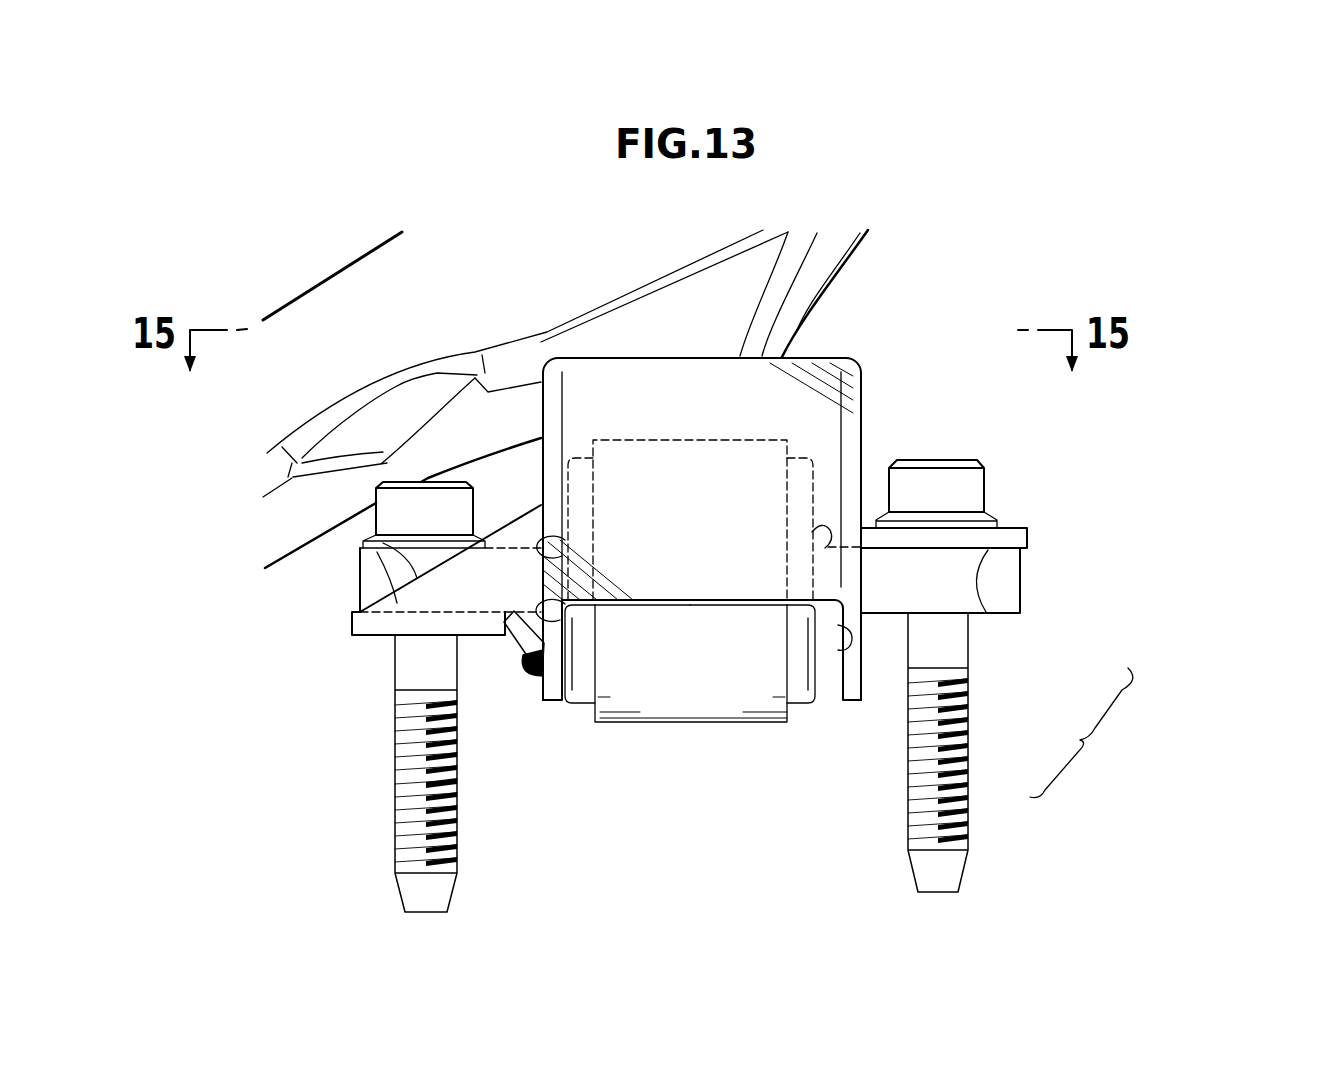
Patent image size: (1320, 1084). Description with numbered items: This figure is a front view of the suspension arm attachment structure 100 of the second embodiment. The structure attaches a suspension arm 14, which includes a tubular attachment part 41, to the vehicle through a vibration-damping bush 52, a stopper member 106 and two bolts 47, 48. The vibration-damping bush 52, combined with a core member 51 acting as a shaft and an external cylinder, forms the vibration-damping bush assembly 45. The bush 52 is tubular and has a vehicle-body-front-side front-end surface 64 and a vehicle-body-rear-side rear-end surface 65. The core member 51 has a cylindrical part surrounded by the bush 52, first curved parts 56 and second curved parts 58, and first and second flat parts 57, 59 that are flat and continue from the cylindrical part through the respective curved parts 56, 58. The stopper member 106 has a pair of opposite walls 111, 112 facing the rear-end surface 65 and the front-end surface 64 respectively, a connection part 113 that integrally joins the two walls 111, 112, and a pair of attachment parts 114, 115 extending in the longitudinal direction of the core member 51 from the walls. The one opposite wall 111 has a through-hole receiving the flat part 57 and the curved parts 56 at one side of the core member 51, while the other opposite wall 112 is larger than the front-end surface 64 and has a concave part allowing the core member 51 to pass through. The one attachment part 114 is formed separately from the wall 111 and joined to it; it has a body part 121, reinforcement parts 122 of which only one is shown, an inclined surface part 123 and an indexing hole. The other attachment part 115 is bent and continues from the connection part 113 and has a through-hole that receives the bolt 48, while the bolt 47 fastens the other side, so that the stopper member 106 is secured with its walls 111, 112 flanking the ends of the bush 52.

The suspension arm attachment structure 100 is at (270, 165).
The suspension arm 14 is at (370, 275).
The bolt 47 is at (425, 495).
The bolt 48 is at (937, 480).
The stopper member 106 is at (838, 350).
The connection part 113 is at (665, 385).
The attachment part 114 is at (392, 583).
The attachment part 115 is at (1024, 530).
The reinforcement part 122 is at (393, 598).
The first curved part 56 is at (563, 562).
The second curved part 58 is at (815, 525).
The first flat part 57 is at (360, 594).
The second flat part 59 is at (1020, 573).
The body part 121 is at (378, 630).
The inclined surface part 123 is at (518, 638).
The rear-end surface 65 is at (548, 690).
The opposite wall 111 is at (566, 663).
The opposite wall 112 is at (824, 667).
The front-end surface 64 is at (822, 688).
The tubular attachment part 41 is at (718, 712).
The core member 51 is at (1008, 606).
The vibration-damping bush 52 is at (837, 633).
The vibration-damping bush assembly 45 is at (1081, 733).